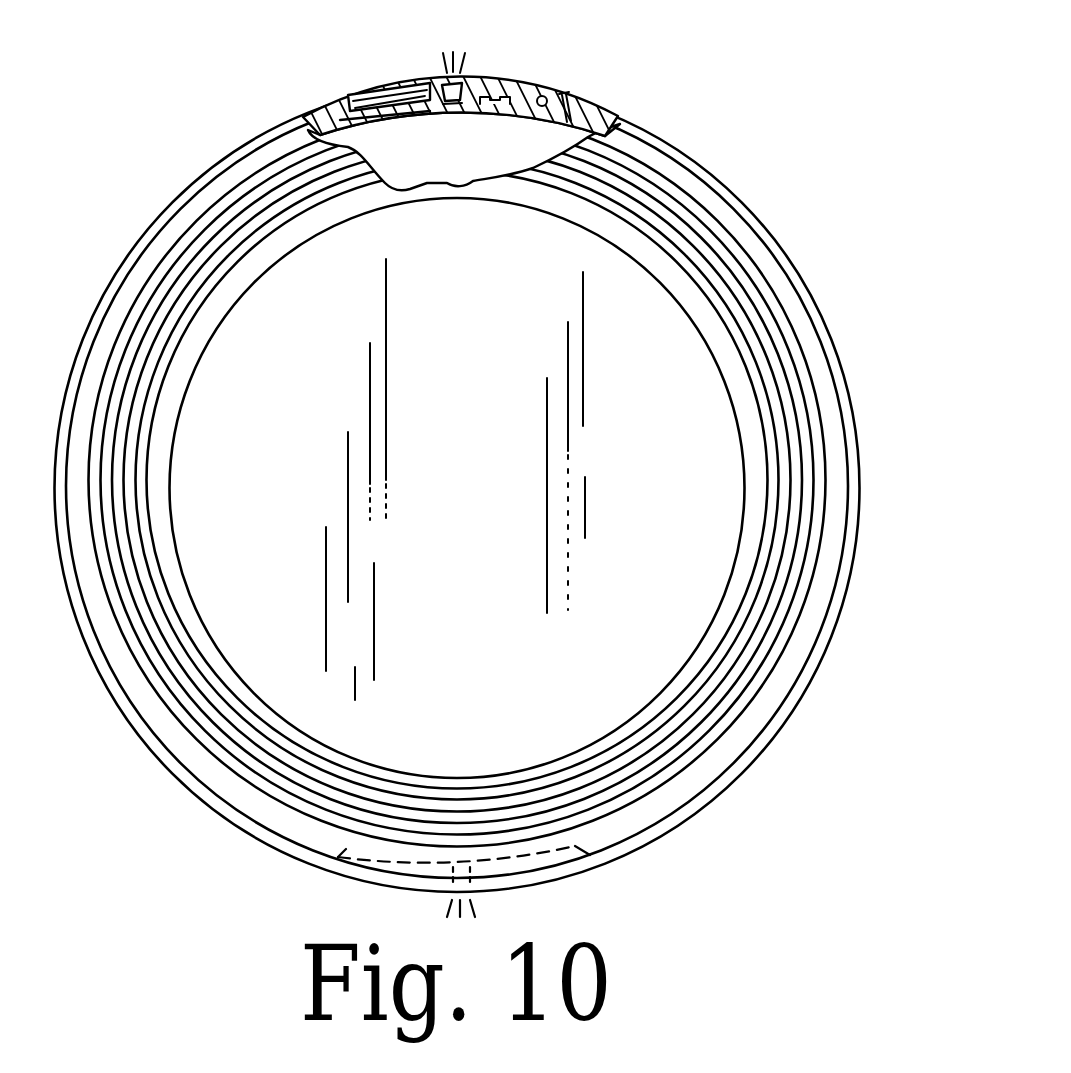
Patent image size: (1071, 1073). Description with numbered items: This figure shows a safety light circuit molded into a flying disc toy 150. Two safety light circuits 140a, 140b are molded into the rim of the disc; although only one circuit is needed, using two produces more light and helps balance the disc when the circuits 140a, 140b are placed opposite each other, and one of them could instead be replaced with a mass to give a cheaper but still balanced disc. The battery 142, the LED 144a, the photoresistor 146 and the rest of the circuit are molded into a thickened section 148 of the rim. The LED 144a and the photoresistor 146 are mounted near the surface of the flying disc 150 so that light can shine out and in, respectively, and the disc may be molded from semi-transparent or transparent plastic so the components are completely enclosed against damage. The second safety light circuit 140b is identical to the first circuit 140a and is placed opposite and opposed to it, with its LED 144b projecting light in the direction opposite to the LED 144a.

The flying disc toy 150 is at (773, 210).
The thickened section 148 is at (393, 122).
The photoresistor 146 is at (578, 92).
The battery 142 is at (372, 87).
The LED 144a is at (467, 77).
The LED 144b is at (467, 887).
The safety light circuit 140a is at (443, 148).
The safety light circuit 140b is at (475, 842).